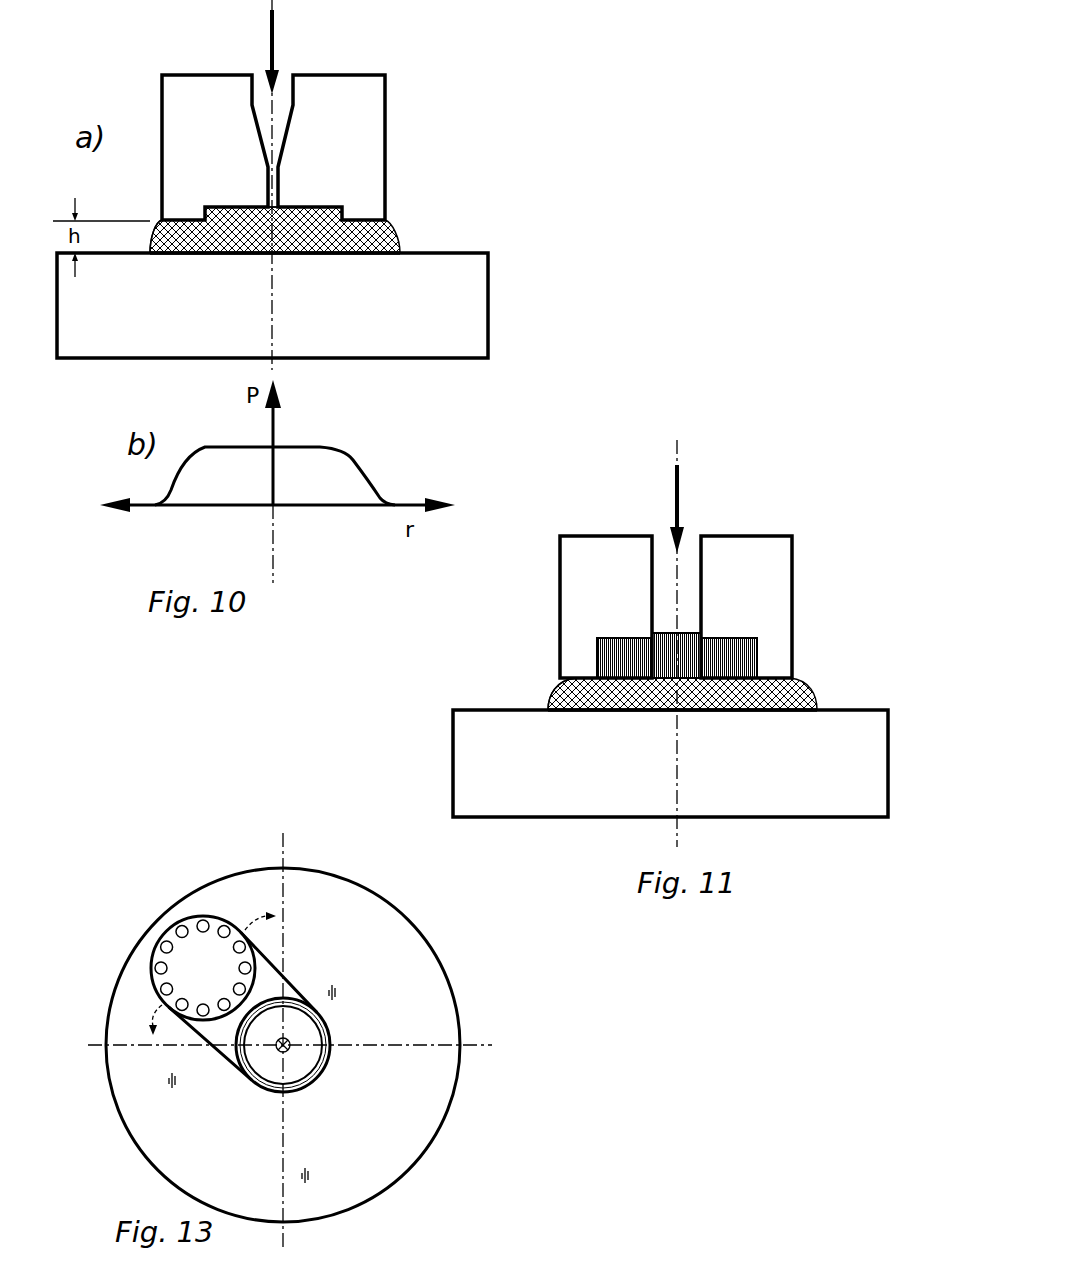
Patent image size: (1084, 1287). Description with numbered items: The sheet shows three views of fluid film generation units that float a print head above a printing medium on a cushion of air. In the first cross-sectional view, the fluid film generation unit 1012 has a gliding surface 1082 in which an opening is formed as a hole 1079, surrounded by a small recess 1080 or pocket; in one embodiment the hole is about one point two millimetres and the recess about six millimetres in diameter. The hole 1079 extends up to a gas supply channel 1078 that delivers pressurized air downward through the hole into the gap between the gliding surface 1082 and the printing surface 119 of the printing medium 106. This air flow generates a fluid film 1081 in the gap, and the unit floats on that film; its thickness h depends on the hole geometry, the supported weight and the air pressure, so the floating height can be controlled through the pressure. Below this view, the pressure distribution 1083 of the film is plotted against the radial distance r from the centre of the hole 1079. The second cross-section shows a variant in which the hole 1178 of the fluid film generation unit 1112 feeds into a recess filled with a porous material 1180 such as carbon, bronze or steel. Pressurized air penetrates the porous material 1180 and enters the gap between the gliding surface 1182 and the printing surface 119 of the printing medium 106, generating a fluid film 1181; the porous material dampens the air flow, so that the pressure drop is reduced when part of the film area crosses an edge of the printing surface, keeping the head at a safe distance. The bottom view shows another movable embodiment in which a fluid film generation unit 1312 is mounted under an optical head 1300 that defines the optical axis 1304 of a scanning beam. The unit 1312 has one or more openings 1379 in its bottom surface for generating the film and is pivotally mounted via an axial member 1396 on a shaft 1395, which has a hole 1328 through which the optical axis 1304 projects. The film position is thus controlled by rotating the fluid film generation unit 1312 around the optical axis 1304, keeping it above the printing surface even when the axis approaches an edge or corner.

In FIG. 10, the gas supply channel 1078 is at (280, 90).
In FIG. 10, the hole 1079 is at (268, 200).
In FIG. 10, the fluid film generation unit 1012 is at (357, 123).
In FIG. 10, the recess 1080 is at (320, 203).
In FIG. 10, the fluid film 1081 is at (395, 232).
In FIG. 10, the gliding surface 1082 is at (160, 234).
In FIG. 10, the pressure distribution 1083 is at (363, 467).
In FIG. 10, the printing surface 119 is at (463, 234).
In FIG. 11, the printing surface 119 is at (474, 698).
In FIG. 10, the printing medium 106 is at (457, 305).
In FIG. 11, the printing medium 106 is at (478, 767).
In FIG. 11, the hole 1178 is at (683, 553).
In FIG. 11, the fluid film generation unit 1112 is at (723, 562).
In FIG. 11, the porous material 1180 is at (638, 638).
In FIG. 11, the fluid film 1181 is at (803, 685).
In FIG. 11, the gliding surface 1182 is at (558, 689).
In FIG. 13, the optical head 1300 is at (382, 943).
In FIG. 13, the fluid film generation unit 1312 is at (215, 953).
In FIG. 13, the openings 1379 is at (178, 928).
In FIG. 13, the optical axis 1304 is at (293, 1040).
In FIG. 13, the hole 1328 is at (298, 1053).
In FIG. 13, the shaft 1395 is at (260, 1083).
In FIG. 13, the axial member 1396 is at (198, 1035).